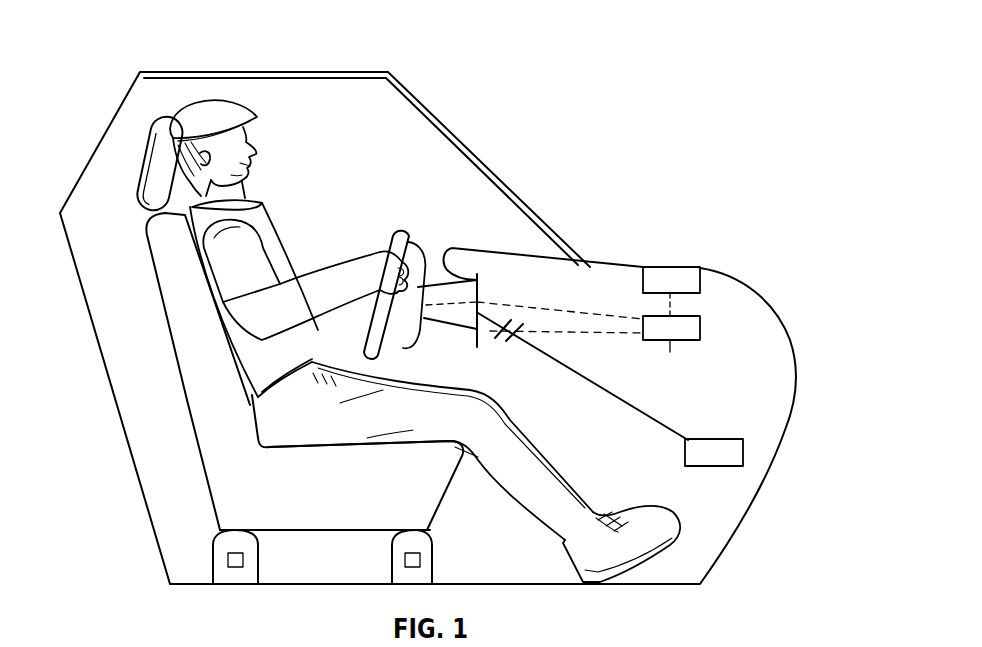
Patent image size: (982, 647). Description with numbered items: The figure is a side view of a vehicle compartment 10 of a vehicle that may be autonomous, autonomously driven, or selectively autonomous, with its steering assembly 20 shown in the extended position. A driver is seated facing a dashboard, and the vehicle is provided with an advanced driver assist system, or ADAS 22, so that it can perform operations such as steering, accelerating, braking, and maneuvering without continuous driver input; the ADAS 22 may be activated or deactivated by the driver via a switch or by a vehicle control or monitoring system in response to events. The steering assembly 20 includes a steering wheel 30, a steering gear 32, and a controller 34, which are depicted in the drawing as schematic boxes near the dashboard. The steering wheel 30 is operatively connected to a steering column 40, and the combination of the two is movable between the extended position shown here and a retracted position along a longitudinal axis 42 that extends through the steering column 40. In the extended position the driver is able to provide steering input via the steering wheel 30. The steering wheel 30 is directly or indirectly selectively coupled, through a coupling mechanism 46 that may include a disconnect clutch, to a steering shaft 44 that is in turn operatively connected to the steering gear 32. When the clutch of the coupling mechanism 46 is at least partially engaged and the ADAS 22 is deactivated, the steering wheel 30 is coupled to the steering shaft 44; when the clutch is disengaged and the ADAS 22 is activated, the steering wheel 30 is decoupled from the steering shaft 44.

The vehicle compartment 10 is at (311, 70).
The steering assembly 20 is at (370, 124).
The advanced driver assist system (ADAS) 22 is at (700, 278).
The steering wheel 30 is at (392, 238).
The steering gear 32 is at (743, 455).
The controller 34 is at (700, 328).
The steering column 40 is at (428, 322).
The longitudinal axis 42 is at (474, 312).
The steering shaft 44 is at (611, 398).
The coupling mechanism 46 is at (507, 352).